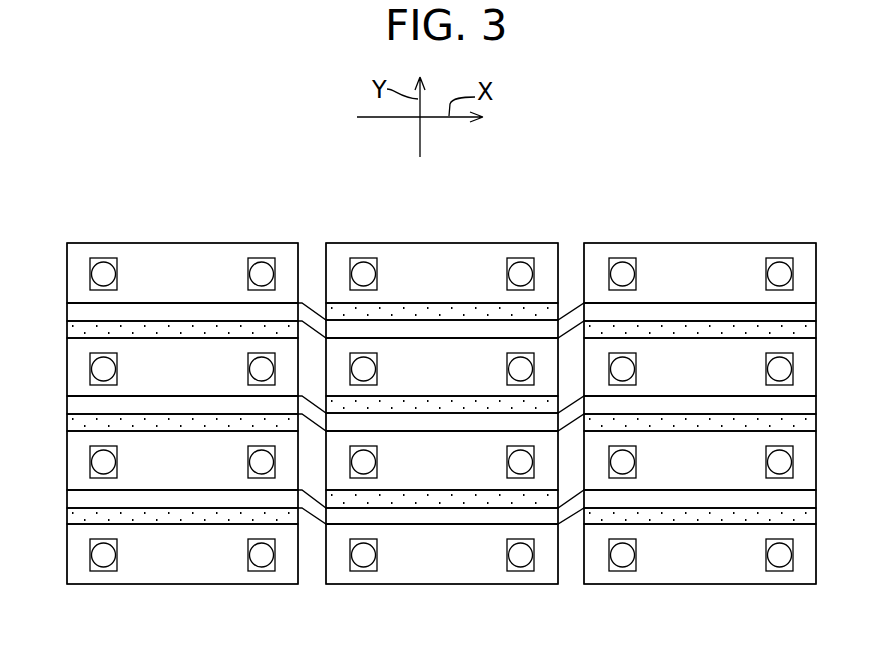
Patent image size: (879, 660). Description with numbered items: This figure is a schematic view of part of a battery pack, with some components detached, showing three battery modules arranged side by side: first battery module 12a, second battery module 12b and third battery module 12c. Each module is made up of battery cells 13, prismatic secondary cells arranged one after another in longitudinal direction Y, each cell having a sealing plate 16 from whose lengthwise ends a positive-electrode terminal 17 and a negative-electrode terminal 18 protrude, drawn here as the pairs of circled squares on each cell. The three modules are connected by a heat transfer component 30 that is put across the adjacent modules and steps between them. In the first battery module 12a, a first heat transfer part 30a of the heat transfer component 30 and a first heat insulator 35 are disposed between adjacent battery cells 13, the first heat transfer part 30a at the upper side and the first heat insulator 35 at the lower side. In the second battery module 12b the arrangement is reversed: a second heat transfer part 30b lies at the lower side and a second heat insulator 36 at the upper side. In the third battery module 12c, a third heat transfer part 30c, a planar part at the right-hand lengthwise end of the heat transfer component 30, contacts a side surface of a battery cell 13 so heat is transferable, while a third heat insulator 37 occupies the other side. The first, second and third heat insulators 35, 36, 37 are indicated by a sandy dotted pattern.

The first battery module 12a is at (199, 243).
The second battery module 12b is at (458, 243).
The third battery module 12c is at (718, 243).
The battery cell 13 is at (168, 255).
The sealing plate 16 is at (213, 378).
The positive-electrode terminal 17 is at (100, 368).
The negative-electrode terminal 18 is at (262, 368).
The heat transfer component 30 is at (67, 310).
The first heat transfer part 30a is at (138, 312).
The second heat transfer part 30b is at (398, 330).
The third heat transfer part 30c is at (657, 313).
The first heat insulator 35 is at (215, 330).
The second heat insulator 36 is at (473, 313).
The third heat insulator 37 is at (733, 332).